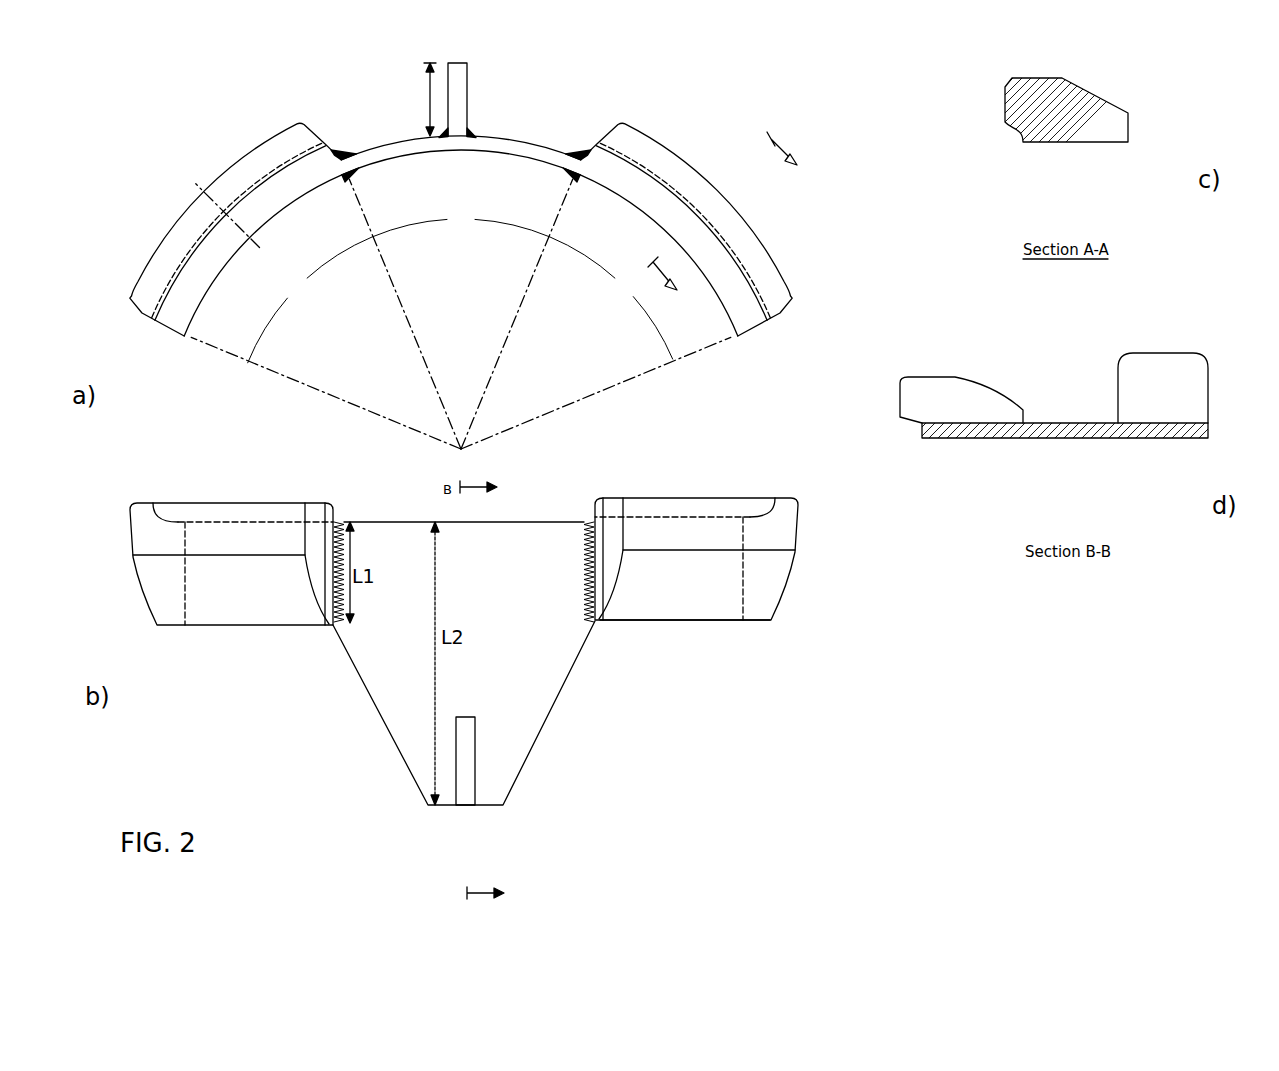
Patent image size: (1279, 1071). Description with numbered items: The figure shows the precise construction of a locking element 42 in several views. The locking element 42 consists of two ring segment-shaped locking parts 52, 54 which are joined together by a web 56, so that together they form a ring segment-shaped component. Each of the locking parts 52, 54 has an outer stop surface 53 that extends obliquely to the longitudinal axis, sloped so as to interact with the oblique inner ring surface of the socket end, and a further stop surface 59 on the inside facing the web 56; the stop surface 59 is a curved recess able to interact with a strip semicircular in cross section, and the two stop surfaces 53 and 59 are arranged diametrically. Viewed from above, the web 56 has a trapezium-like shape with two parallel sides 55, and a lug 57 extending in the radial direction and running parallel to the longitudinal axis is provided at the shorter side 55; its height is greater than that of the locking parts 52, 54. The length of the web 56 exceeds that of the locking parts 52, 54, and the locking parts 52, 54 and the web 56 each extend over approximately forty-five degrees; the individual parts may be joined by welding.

The locking element 42 is at (364, 90).
The locking part 52 is at (660, 138).
The outer stop surface 53 is at (773, 588).
The locking part 54 is at (230, 163).
The parallel side 55 is at (540, 518).
The web 56 is at (522, 140).
The lug 57 is at (462, 76).
The stop surface 59 is at (1010, 127).